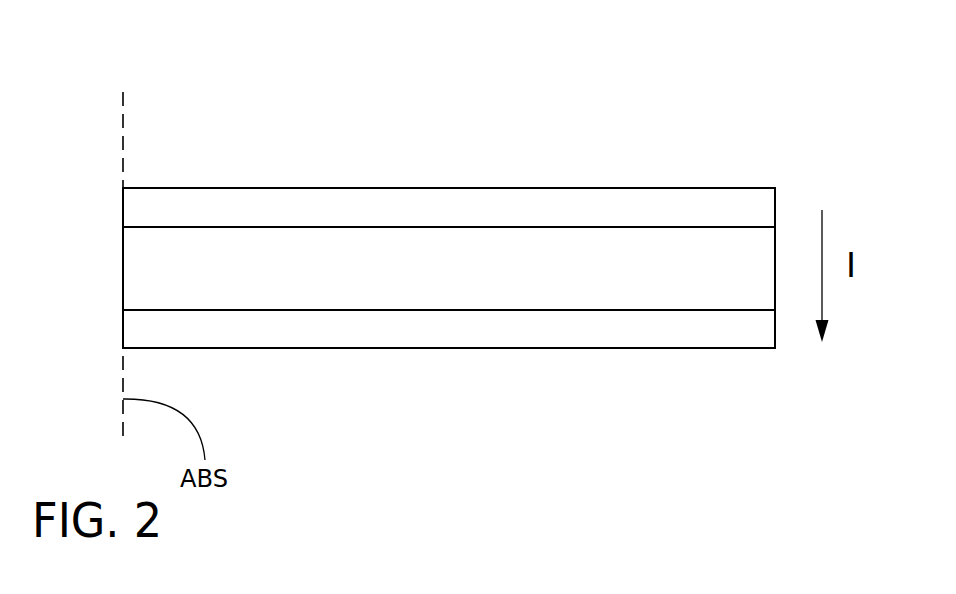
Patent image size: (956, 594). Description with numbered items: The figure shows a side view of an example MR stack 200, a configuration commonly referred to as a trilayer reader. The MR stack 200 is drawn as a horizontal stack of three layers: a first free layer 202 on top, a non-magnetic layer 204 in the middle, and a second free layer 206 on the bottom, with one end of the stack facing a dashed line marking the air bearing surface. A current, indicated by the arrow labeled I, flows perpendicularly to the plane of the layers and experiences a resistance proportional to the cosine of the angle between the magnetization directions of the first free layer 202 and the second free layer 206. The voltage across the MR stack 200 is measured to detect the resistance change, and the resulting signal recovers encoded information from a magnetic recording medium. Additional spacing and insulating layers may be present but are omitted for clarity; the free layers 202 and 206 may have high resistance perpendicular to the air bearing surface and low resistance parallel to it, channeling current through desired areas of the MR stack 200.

The MR stack 200 is at (214, 58).
The first free layer 202 is at (329, 207).
The non-magnetic layer 204 is at (503, 248).
The second free layer 206 is at (481, 334).